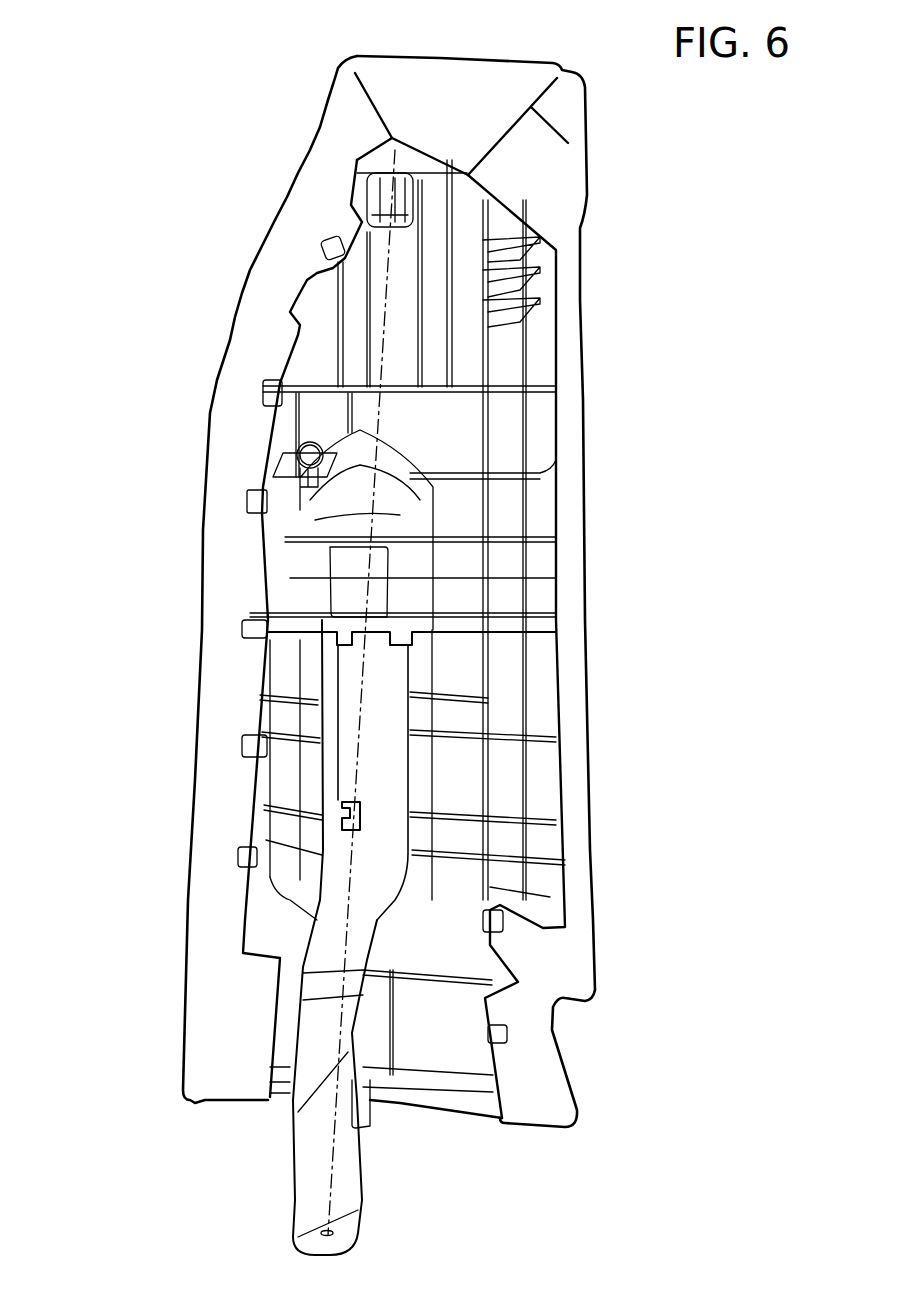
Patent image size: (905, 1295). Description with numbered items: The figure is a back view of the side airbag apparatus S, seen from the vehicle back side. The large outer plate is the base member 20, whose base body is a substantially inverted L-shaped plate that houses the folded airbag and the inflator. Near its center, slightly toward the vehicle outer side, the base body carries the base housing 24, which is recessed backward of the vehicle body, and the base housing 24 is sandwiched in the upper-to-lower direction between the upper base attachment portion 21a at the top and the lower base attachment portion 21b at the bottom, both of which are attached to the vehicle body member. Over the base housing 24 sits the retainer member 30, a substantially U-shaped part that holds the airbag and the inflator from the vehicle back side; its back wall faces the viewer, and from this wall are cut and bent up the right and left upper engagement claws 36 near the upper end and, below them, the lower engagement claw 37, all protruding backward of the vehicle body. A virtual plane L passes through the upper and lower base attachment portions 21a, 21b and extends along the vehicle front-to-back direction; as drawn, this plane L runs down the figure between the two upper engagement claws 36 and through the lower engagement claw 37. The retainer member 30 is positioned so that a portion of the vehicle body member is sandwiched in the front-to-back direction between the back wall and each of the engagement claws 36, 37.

The side airbag apparatus S is at (115, 110).
The base member 20 is at (500, 437).
The upper base attachment portion 21a is at (410, 207).
The lower base attachment portion 21b is at (345, 1227).
The virtual plane L is at (383, 358).
The base housing 24 is at (393, 563).
The upper engagement claws 36 is at (430, 622).
The lower engagement claw 37 is at (343, 810).
The retainer member 30 is at (387, 770).